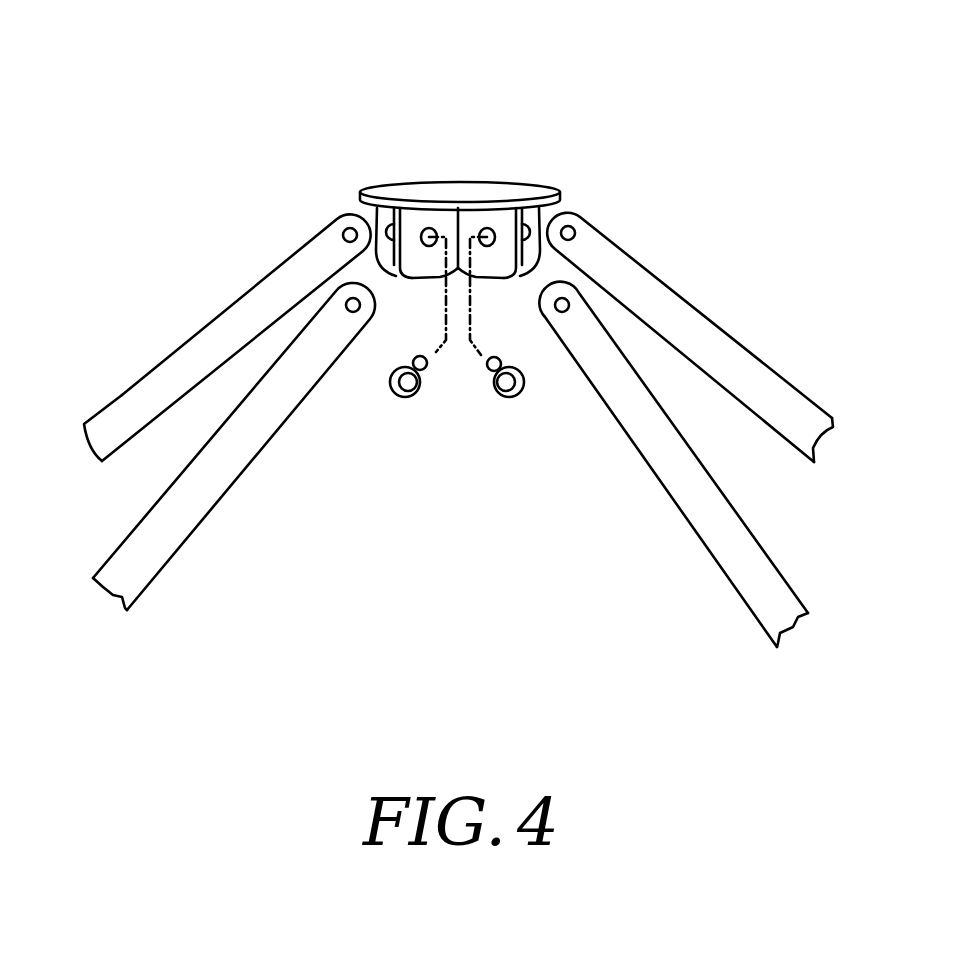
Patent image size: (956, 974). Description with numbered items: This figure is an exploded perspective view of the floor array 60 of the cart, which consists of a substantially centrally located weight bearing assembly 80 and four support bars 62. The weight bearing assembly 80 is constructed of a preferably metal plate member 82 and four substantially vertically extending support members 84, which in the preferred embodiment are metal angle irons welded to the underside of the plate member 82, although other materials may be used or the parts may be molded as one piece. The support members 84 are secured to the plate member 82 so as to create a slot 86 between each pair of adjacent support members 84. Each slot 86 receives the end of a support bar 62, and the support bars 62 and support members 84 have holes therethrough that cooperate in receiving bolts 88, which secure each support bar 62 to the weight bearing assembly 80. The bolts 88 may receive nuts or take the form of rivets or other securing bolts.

The floor array 60 is at (436, 264).
The support bar 62 is at (127, 415).
The weight bearing assembly 80 is at (358, 190).
The plate member 82 is at (462, 190).
The support member 84 is at (541, 214).
The slot 86 is at (397, 278).
The bolt 88 is at (412, 396).